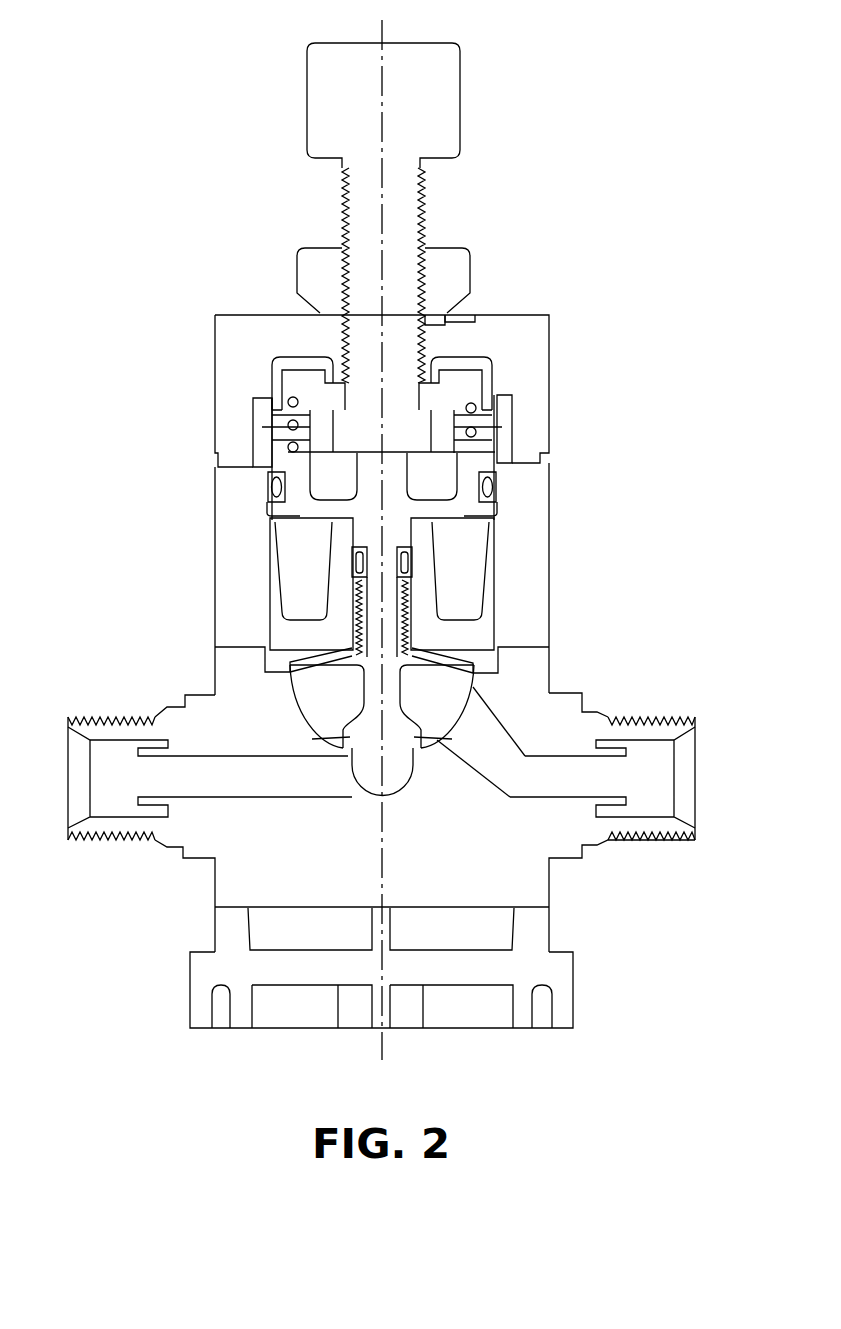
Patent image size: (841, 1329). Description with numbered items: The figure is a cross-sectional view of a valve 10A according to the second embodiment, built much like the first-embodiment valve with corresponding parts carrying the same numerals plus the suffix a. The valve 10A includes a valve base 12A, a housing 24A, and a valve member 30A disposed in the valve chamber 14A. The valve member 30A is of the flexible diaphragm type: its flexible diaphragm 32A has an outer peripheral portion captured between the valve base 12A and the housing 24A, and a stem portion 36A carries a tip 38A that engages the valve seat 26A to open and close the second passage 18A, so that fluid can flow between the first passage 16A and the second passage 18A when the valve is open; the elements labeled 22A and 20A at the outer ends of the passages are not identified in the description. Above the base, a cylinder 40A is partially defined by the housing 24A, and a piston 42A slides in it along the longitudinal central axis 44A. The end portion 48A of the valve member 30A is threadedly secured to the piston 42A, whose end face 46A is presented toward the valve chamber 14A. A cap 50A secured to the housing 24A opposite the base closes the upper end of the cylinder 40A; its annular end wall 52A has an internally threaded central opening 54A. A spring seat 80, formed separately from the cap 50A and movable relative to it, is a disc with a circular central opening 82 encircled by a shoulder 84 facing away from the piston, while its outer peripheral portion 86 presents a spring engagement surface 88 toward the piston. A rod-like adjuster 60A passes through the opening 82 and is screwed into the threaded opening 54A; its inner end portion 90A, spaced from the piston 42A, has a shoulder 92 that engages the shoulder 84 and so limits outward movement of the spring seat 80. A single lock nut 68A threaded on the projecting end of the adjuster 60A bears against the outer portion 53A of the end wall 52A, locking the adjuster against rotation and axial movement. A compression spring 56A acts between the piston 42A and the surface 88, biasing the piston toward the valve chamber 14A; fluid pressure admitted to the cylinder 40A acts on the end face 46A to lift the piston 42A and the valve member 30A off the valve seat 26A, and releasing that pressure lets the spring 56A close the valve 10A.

The valve 10A is at (245, 1037).
The valve base 12A is at (212, 880).
The valve chamber 14A is at (433, 695).
The first passage 16A is at (558, 783).
The second passage 18A is at (188, 775).
The outlet port 20A is at (652, 800).
The inlet port 22A is at (117, 793).
The housing 24A is at (215, 590).
The valve seat 26A is at (428, 747).
The valve member 30A is at (353, 692).
The flexible diaphragm 32A is at (473, 683).
The stem portion 36A is at (370, 725).
The tip 38A is at (330, 737).
The cylinder 40A is at (470, 565).
The piston 42A is at (510, 498).
The longitudinal central axis 44A is at (383, 112).
The piston end face 46A is at (425, 548).
The end portion 48A is at (415, 592).
The cap 50A is at (553, 313).
The end wall 52A is at (455, 320).
The outer portion 53A is at (475, 320).
The threaded central opening 54A is at (460, 315).
The compression spring 56A is at (275, 450).
The adjuster 60A is at (342, 193).
The lock nut 68A is at (297, 268).
The spring seat 80 is at (270, 382).
The circular central opening 82 is at (287, 423).
The shoulder 84 is at (497, 440).
The outer peripheral portion 86 is at (472, 378).
The spring engagement surface 88 is at (478, 408).
The inner end portion 90A is at (268, 510).
The shoulder 92 is at (333, 415).